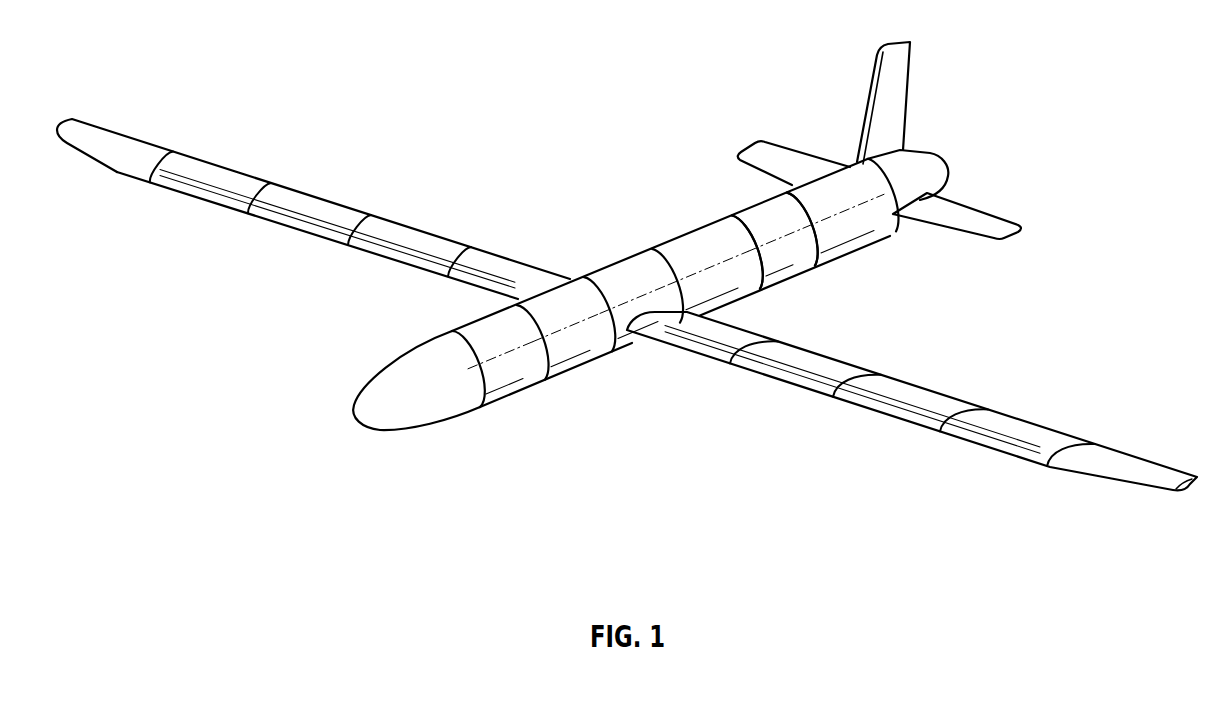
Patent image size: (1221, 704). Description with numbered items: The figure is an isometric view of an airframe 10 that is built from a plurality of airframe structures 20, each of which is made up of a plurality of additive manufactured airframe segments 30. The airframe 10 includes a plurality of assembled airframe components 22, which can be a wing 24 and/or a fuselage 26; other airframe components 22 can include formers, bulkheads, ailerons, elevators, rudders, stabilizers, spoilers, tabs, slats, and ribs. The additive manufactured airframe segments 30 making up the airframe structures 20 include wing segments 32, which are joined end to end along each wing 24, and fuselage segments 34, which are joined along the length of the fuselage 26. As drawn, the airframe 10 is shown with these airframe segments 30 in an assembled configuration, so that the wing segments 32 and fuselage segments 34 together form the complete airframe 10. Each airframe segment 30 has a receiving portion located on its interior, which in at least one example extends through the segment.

The airframe 10 is at (627, 256).
The airframe structure 20 is at (313, 192).
The assembled airframe component 22 is at (453, 238).
The wing 24 is at (221, 212).
The fuselage 26 is at (678, 223).
The additive manufactured airframe segment 30 is at (528, 398).
The wing segment 32 is at (741, 380).
The fuselage segment 34 is at (741, 222).